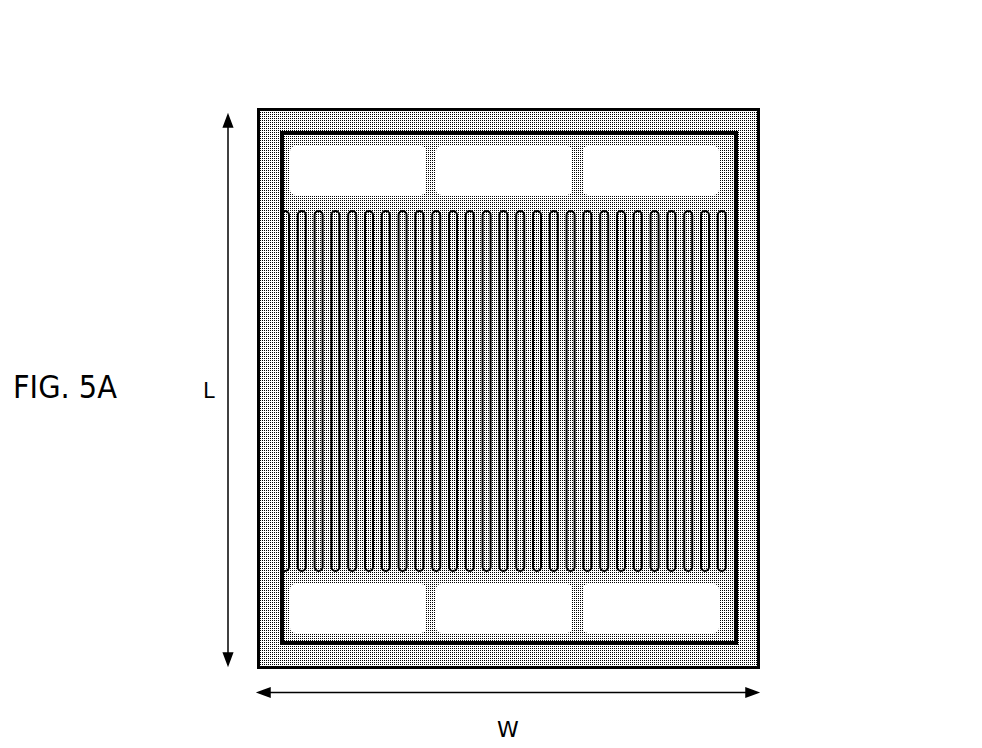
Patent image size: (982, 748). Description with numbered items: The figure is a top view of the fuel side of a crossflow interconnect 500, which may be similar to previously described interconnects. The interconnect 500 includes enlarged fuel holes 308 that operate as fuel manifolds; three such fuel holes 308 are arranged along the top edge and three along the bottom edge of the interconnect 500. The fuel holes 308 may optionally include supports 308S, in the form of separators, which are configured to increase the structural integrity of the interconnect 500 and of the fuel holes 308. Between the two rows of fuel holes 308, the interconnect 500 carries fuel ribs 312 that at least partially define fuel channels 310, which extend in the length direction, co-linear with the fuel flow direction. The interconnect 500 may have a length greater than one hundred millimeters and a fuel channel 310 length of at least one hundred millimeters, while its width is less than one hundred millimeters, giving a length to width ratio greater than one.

The crossflow interconnect 500 is at (482, 384).
The fuel holes 308 is at (716, 168).
The supports 308S is at (504, 122).
The fuel channel 310 is at (527, 406).
The fuel ribs 312 is at (515, 382).